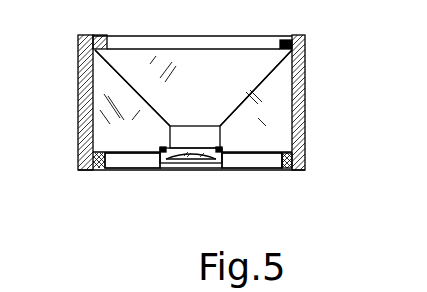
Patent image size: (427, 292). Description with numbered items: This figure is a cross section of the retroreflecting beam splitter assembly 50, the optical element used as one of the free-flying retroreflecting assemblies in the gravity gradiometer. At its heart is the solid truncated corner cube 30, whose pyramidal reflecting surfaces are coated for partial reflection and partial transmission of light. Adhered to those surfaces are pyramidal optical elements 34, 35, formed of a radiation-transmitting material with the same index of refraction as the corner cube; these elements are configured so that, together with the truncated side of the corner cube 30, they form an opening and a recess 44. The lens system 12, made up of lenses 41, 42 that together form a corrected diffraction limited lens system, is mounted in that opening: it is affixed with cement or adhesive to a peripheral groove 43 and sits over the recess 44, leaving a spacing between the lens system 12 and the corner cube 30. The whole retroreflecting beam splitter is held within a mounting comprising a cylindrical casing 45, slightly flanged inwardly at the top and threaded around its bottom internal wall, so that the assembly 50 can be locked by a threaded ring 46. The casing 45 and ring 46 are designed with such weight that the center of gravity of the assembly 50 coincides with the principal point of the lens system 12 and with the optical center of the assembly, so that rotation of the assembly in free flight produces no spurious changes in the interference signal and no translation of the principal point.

The retroreflecting beam splitter assembly 50 is at (310, 70).
The truncated corner cube 30 is at (200, 62).
The optical element 34 is at (110, 100).
The optical element 35 is at (283, 118).
The recess 44 is at (210, 133).
The cylindrical casing 45 is at (222, 151).
The lens 42 is at (198, 163).
The lens 41 is at (227, 167).
The peripheral groove 43 is at (158, 153).
The lens system 12 is at (170, 167).
The threaded ring 46 is at (300, 166).